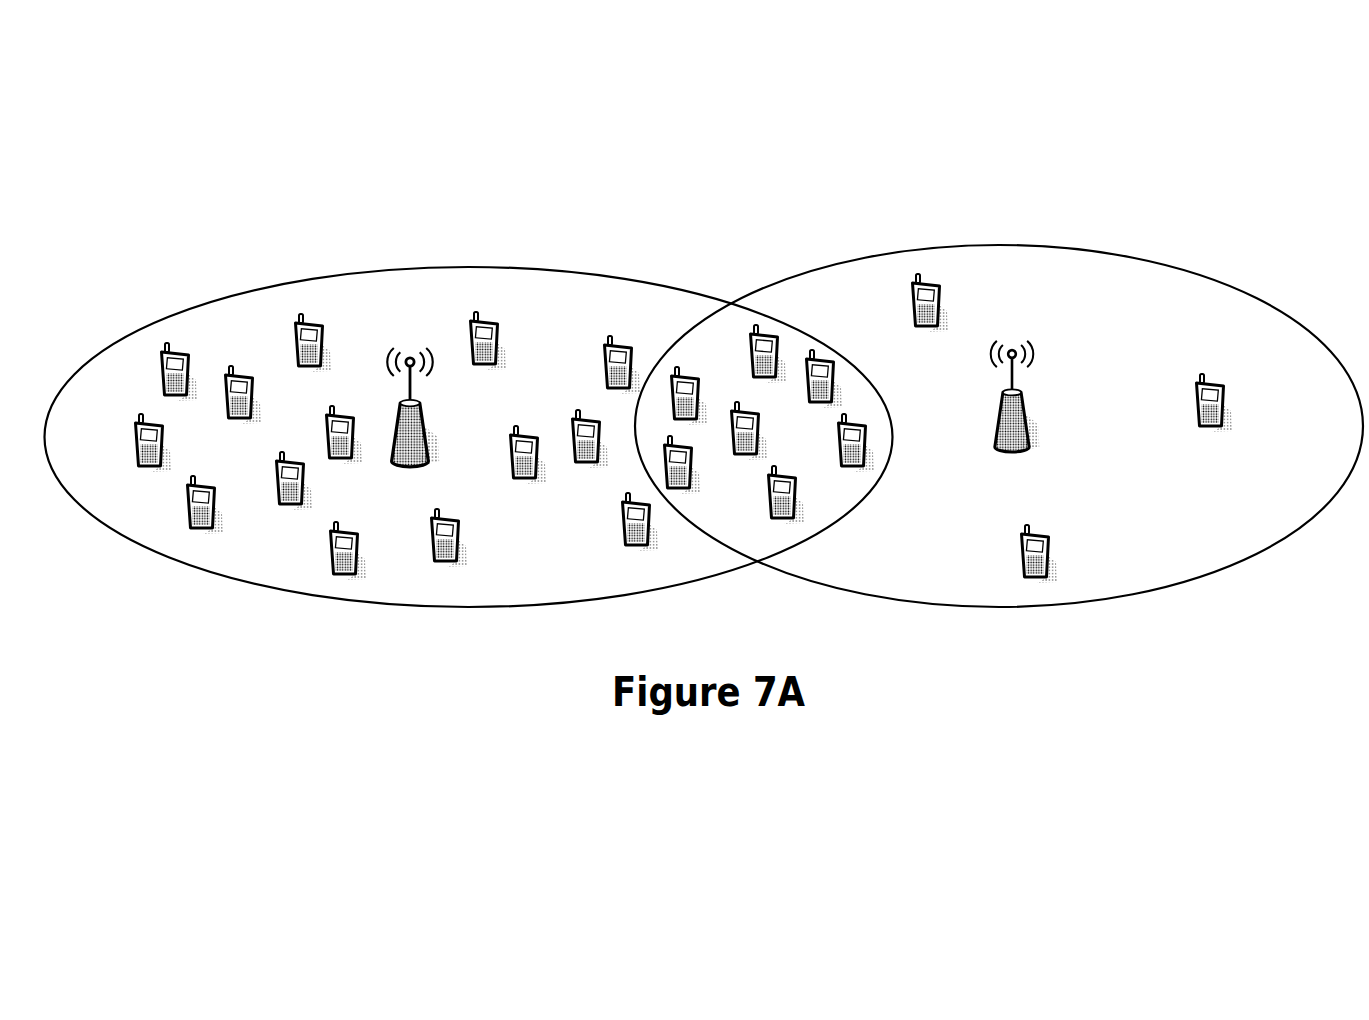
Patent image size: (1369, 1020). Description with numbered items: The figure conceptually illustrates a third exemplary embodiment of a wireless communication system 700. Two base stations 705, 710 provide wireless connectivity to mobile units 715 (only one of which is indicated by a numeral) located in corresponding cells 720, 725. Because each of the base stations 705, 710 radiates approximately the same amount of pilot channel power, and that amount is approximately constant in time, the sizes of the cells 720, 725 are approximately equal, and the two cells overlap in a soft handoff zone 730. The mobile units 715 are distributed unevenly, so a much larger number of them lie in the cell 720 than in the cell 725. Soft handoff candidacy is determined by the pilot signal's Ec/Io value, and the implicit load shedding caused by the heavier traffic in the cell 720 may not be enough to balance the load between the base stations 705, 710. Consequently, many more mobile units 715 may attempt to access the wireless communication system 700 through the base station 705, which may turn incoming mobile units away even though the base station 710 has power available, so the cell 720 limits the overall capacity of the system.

The wireless communication system 700 is at (1104, 111).
The base station 705 is at (411, 467).
The base station 710 is at (1013, 450).
The mobile unit 715 is at (323, 333).
The cell 720 is at (350, 603).
The cell 725 is at (1050, 605).
The soft handoff zone 730 is at (730, 334).